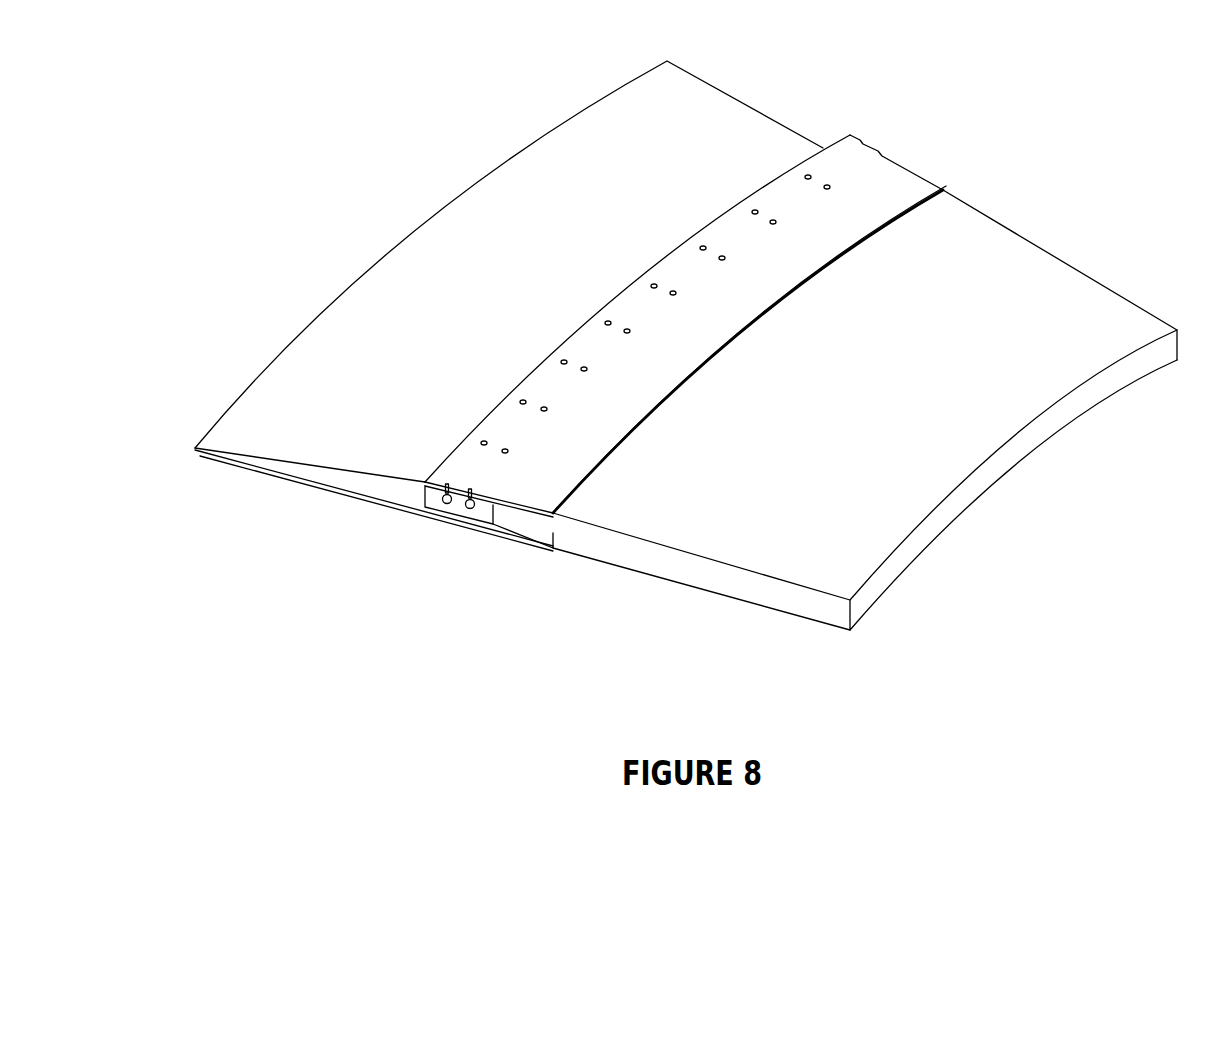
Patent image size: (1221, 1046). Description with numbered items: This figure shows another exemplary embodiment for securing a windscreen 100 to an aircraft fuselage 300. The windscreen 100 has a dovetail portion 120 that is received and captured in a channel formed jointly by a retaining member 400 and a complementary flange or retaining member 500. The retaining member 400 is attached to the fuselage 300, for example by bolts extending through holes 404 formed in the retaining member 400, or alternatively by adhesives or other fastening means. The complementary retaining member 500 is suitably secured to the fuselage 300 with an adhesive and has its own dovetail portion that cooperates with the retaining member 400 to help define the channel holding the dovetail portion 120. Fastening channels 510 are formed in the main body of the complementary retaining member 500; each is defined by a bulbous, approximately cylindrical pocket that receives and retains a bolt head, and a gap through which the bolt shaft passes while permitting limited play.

The windscreen 100 is at (1097, 282).
The dovetail portion 120 is at (538, 520).
The fuselage 300 is at (737, 102).
The retaining member 400 is at (915, 170).
The holes 404 is at (625, 321).
The complementary retaining member 500 is at (428, 493).
The fastening channels 510 is at (468, 510).